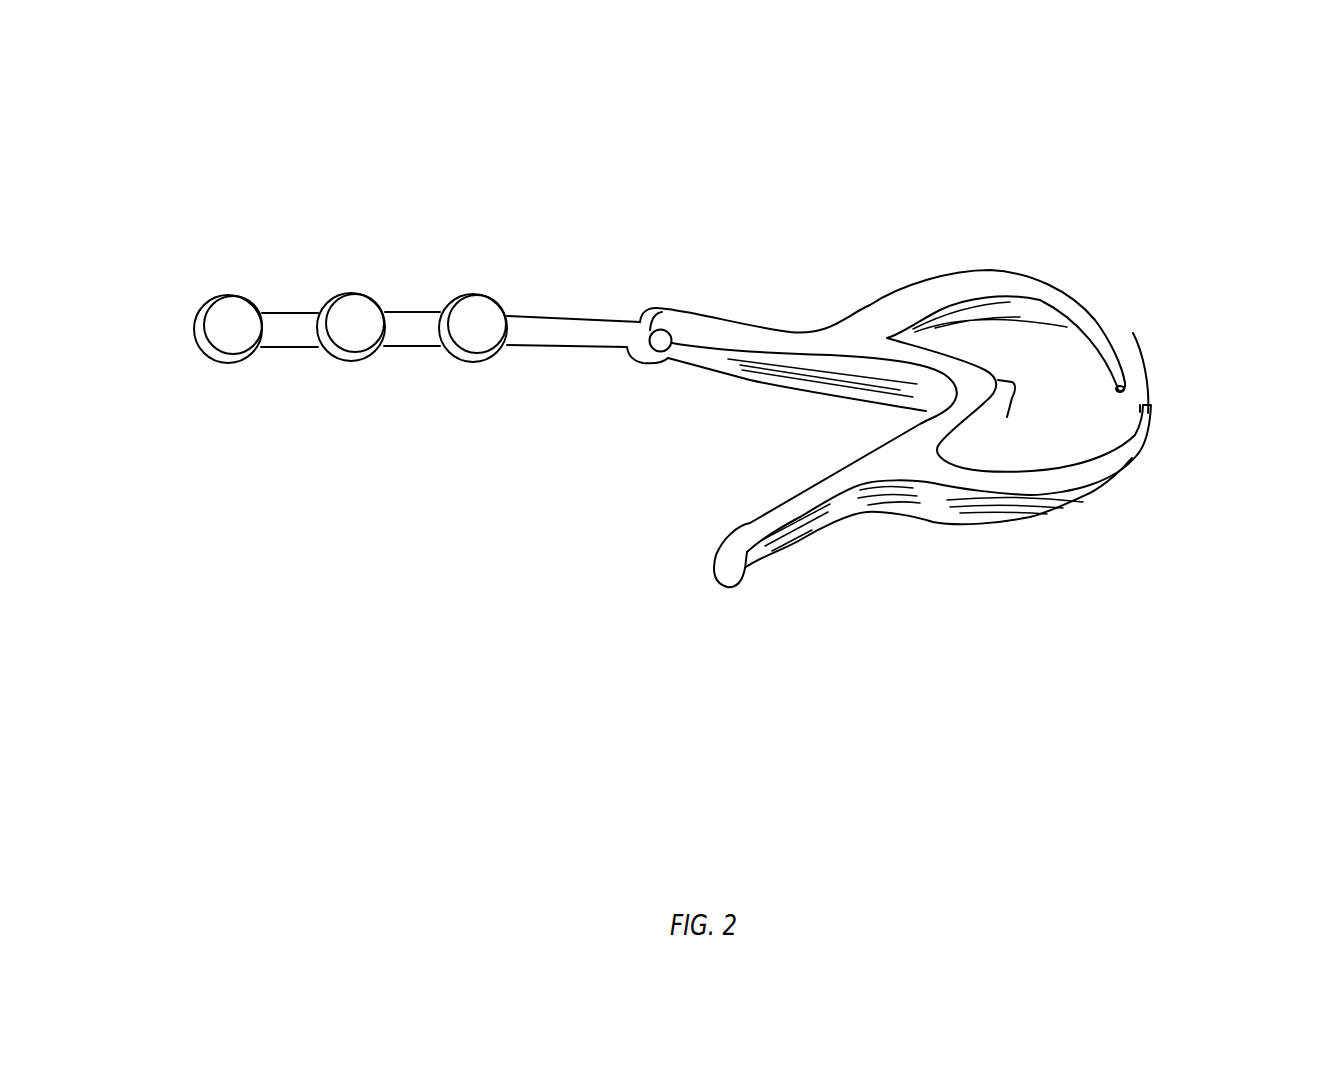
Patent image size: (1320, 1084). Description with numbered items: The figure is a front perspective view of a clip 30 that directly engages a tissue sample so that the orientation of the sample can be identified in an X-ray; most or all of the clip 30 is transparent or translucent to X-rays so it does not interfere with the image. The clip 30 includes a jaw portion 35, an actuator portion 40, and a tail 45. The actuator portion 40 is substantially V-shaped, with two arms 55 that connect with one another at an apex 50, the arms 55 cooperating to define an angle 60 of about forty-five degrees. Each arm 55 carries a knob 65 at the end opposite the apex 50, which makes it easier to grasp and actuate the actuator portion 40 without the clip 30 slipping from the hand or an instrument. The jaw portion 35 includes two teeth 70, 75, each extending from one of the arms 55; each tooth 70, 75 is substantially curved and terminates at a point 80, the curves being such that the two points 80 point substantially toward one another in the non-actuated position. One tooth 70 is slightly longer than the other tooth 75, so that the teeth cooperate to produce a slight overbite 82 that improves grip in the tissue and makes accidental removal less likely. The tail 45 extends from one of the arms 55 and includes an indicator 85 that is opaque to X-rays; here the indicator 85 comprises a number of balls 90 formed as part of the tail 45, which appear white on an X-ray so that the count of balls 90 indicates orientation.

The clip 30 is at (1097, 148).
The jaw portion 35 is at (1143, 576).
The actuator portion 40 is at (873, 662).
The tail 45 is at (272, 158).
The apex 50 is at (1003, 416).
The arms 55 is at (690, 357).
The angle 60 is at (812, 386).
The knob 65 is at (665, 316).
The tooth 70 is at (995, 522).
The tooth 75 is at (1015, 287).
The point 80 is at (1098, 377).
The overbite 82 is at (1153, 351).
The indicator 85 is at (412, 338).
The balls 90 is at (222, 333).